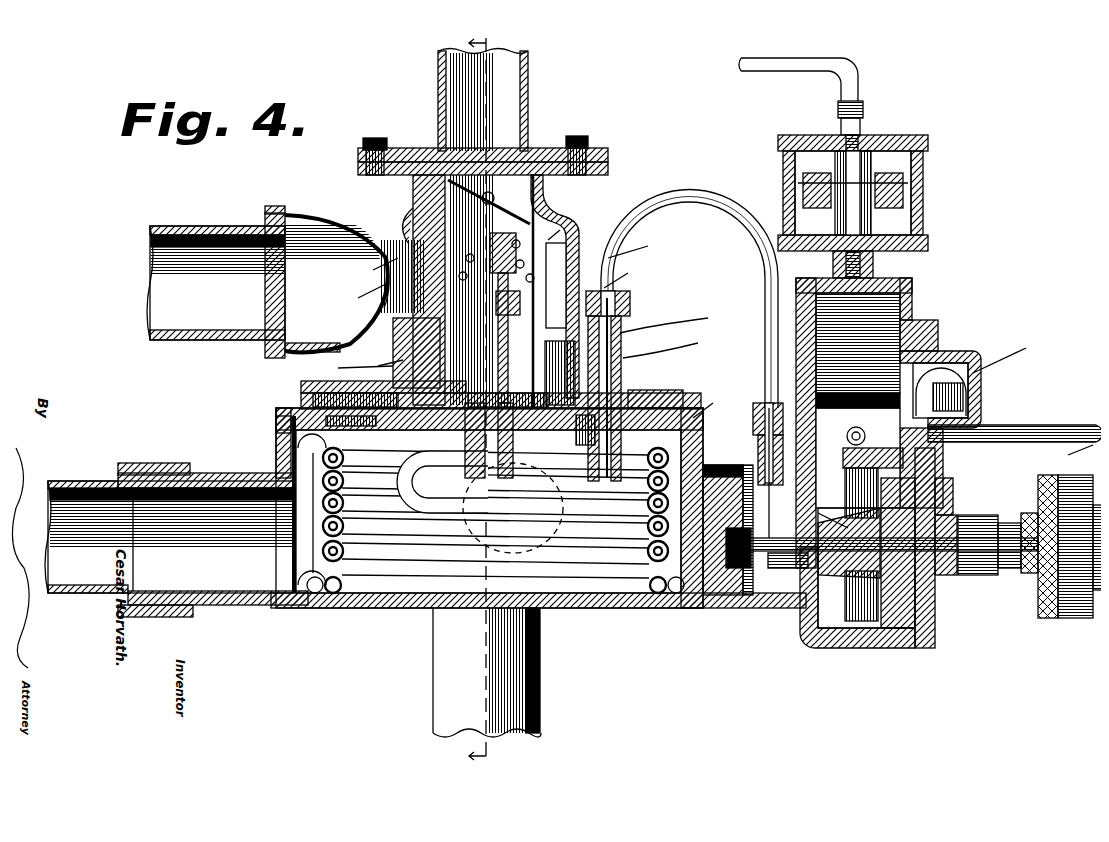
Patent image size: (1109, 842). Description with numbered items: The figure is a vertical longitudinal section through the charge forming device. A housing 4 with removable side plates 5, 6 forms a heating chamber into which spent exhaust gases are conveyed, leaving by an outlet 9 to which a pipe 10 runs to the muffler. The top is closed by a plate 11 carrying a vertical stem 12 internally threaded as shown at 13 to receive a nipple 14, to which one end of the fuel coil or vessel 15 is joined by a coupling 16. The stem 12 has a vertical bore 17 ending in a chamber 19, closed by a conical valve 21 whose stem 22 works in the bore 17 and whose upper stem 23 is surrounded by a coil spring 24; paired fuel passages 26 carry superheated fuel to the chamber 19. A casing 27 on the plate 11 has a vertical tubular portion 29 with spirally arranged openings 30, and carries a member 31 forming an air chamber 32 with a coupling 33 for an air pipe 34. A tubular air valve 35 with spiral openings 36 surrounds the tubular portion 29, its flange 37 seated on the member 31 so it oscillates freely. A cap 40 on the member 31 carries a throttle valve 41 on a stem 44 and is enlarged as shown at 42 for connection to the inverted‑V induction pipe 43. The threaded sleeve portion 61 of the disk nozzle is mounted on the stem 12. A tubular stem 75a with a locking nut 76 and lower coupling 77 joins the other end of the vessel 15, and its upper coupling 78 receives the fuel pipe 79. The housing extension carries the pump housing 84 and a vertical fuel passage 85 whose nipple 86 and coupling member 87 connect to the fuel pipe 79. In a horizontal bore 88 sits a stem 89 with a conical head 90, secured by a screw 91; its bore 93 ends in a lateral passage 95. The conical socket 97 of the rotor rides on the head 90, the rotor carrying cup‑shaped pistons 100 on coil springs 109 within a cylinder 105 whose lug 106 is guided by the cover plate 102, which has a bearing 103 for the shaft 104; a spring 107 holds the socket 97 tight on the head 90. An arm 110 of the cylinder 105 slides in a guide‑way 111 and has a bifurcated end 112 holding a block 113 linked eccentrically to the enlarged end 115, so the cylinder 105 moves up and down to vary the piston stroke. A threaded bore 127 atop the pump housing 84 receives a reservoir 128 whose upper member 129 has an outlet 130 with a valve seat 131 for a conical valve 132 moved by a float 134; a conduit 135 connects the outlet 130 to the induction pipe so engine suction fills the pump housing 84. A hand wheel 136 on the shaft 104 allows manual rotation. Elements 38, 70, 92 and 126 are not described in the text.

The housing 4 is at (390, 600).
The removable side plate 5 is at (376, 286).
The removable side plate 6 is at (480, 399).
The outlet 9 is at (172, 540).
The pipe 10 is at (176, 543).
The plate 11 is at (275, 404).
The vertical stem 12 is at (348, 367).
The internal thread 13 is at (270, 522).
The nipple 14 is at (425, 438).
The coil or vessel 15 is at (495, 520).
The coupling 16 is at (505, 445).
The vertical bore 17 is at (375, 364).
The chamber 19 is at (677, 316).
The conical valve 21 is at (632, 272).
The valve stem 22 is at (678, 342).
The upwardly projecting stem 23 is at (392, 338).
The coil spring 24 is at (548, 260).
The fuel passages 26 is at (612, 320).
The casing 27 is at (293, 385).
The vertical tubular portion 29 is at (542, 205).
The spirally arranged openings 30 is at (375, 240).
The member 31 is at (350, 215).
The air chamber 32 is at (645, 244).
The coupling 33 is at (265, 205).
The air pipe 34 is at (216, 283).
The tubular air valve 35 is at (390, 250).
The spirally arranged openings 36 is at (349, 298).
The flange 37 is at (410, 215).
The valve head 38 is at (496, 247).
The cap 40 is at (552, 222).
The throttle valve 41 is at (490, 200).
The enlargement 42 is at (582, 150).
The induction pipe 43 is at (430, 62).
The throttle valve stem 44 is at (528, 140).
The threaded sleeve portion 61 is at (612, 340).
The top wall 70 is at (266, 440).
The tubular stem 75a is at (520, 352).
The nut 76 is at (640, 395).
The coupling 77 is at (717, 400).
The coupling 78 is at (620, 295).
The fuel pipe 79 is at (688, 188).
The pump housing 84 is at (858, 400).
The vertical fuel passage 85 is at (735, 560).
The nipple 86 is at (750, 440).
The coupling member 87 is at (745, 405).
The horizontal bore 88 is at (810, 570).
The stem 89 is at (790, 545).
The conical head 90 is at (805, 640).
The screw 91 is at (728, 530).
The wall 92 is at (688, 600).
The bore 93 is at (795, 560).
The lateral passage 95 is at (880, 507).
The conical socket 97 is at (927, 640).
The cup-shaped pistons 100 is at (855, 615).
The cover plate 102 is at (935, 500).
The bearing 103 is at (970, 567).
The shaft 104 is at (960, 575).
The cylinder 105 is at (873, 453).
The lug 106 is at (940, 600).
The spring 107 is at (935, 478).
The coil springs 109 is at (890, 622).
The arm 110 is at (975, 415).
The guide-way 111 is at (865, 395).
The bifurcated end 112 is at (1021, 351).
The block 113 is at (957, 388).
The enlarged end 115 is at (950, 345).
The arm 126 is at (1068, 455).
The threaded bore 127 is at (868, 262).
The reservoir 128 is at (910, 272).
The upper member 129 is at (852, 140).
The outlet 130 is at (855, 95).
The valve seat 131 is at (852, 118).
The conical valve 132 is at (920, 134).
The float 134 is at (900, 182).
The conduit 135 is at (800, 52).
The hand wheel 136 is at (1040, 610).